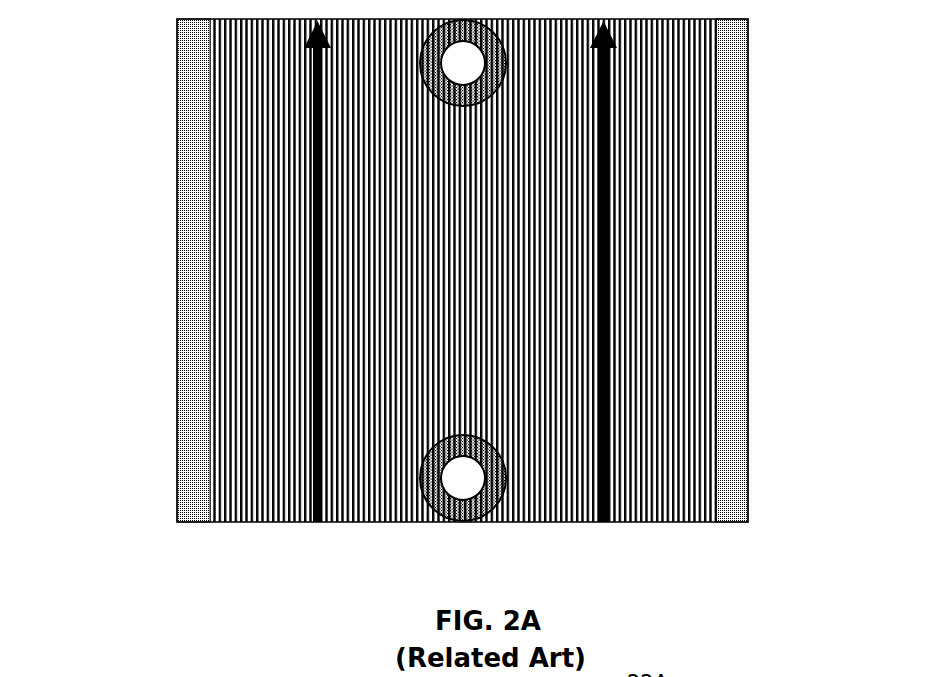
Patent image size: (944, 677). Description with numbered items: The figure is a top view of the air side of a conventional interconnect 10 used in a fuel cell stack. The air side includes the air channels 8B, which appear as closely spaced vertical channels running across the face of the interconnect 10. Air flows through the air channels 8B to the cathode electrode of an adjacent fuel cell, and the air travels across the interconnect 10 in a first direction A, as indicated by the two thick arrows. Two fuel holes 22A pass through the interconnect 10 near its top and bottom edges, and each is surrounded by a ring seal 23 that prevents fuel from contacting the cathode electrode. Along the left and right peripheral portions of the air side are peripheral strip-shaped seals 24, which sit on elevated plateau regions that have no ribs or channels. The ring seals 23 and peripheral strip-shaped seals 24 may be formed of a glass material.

The interconnect 10 is at (455, 308).
The first direction A is at (605, 185).
The peripheral strip-shaped seals 24 is at (743, 248).
The air channels 8B is at (633, 357).
The ring seals 23 is at (432, 508).
The fuel holes 22A is at (470, 498).